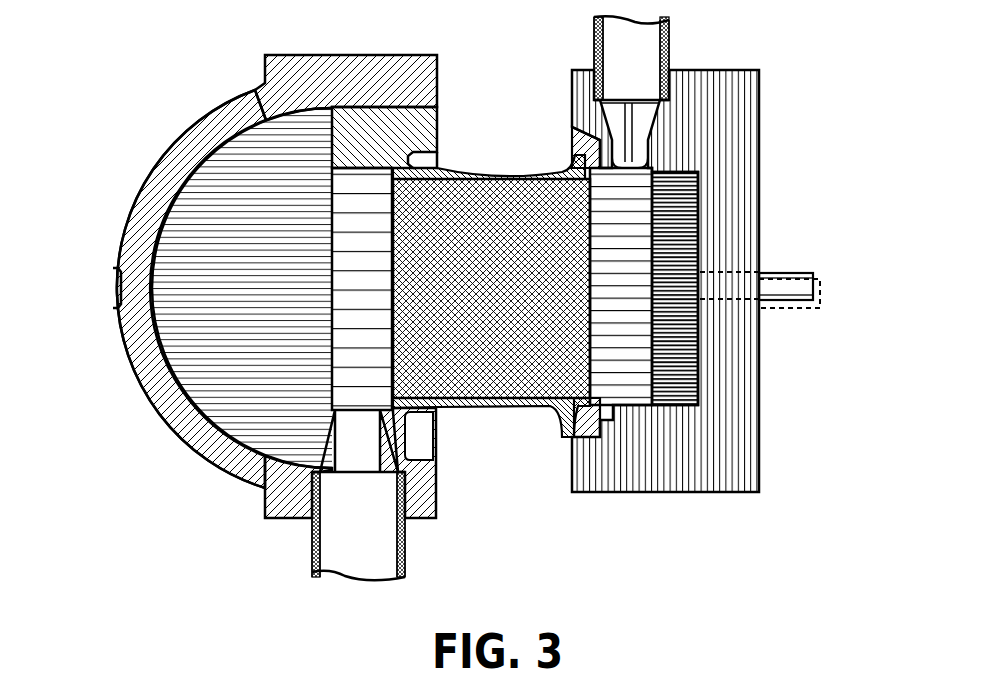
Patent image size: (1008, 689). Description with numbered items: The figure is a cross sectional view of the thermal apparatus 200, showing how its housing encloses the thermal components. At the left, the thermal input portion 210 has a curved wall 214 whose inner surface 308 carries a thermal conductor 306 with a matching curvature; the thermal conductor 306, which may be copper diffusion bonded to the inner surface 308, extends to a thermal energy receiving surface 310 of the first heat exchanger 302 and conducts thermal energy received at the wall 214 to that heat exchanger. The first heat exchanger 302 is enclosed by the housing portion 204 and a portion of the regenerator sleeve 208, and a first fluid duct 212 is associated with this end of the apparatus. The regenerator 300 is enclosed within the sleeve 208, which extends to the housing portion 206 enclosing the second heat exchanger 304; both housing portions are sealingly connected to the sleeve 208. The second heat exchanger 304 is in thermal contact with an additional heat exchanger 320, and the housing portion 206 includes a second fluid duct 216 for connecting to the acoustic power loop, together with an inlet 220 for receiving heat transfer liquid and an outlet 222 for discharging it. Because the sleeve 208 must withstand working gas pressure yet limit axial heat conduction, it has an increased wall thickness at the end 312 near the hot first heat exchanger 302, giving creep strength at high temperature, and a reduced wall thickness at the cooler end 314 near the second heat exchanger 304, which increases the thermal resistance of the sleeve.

The thermal apparatus 200 is at (130, 62).
The housing portion 204 is at (365, 62).
The housing portion 206 is at (742, 95).
The regenerator sleeve 208 is at (503, 172).
The thermal input portion 210 is at (132, 166).
The first fluid duct 212 is at (312, 562).
The wall 214 is at (200, 438).
The second fluid duct 216 is at (671, 44).
The inlet 220 is at (790, 310).
The outlet 222 is at (785, 275).
The regenerator 300 is at (527, 372).
The first heat exchanger 302 is at (383, 385).
The second heat exchanger 304 is at (644, 397).
The thermal conductor 306 is at (255, 143).
The inner surface 308 is at (160, 343).
The thermal energy receiving surface 310 is at (330, 382).
The end of the sleeve 312 is at (445, 156).
The end of the sleeve 314 is at (560, 160).
The additional heat exchanger 320 is at (700, 208).